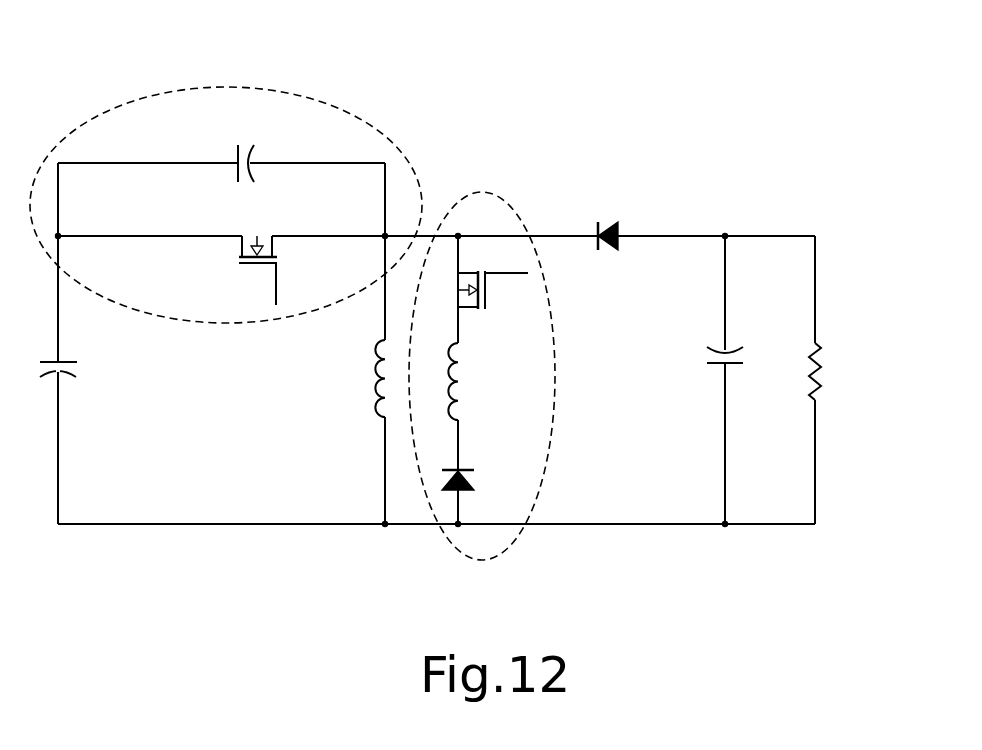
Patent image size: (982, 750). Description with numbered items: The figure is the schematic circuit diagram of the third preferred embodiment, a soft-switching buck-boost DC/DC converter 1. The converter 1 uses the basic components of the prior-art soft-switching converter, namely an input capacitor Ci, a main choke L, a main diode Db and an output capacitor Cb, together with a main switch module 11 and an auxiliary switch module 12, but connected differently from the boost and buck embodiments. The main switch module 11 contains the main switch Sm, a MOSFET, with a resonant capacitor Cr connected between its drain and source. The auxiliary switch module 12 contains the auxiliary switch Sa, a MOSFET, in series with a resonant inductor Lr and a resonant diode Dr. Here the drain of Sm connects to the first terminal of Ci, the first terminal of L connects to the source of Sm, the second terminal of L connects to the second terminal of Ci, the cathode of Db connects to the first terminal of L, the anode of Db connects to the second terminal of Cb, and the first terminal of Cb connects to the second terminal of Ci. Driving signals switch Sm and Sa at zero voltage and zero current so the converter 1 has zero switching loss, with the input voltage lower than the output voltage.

The soft-switching buck-boost DC/DC converter 1 is at (908, 83).
The main switch module 11 is at (337, 107).
The auxiliary switch module 12 is at (543, 475).